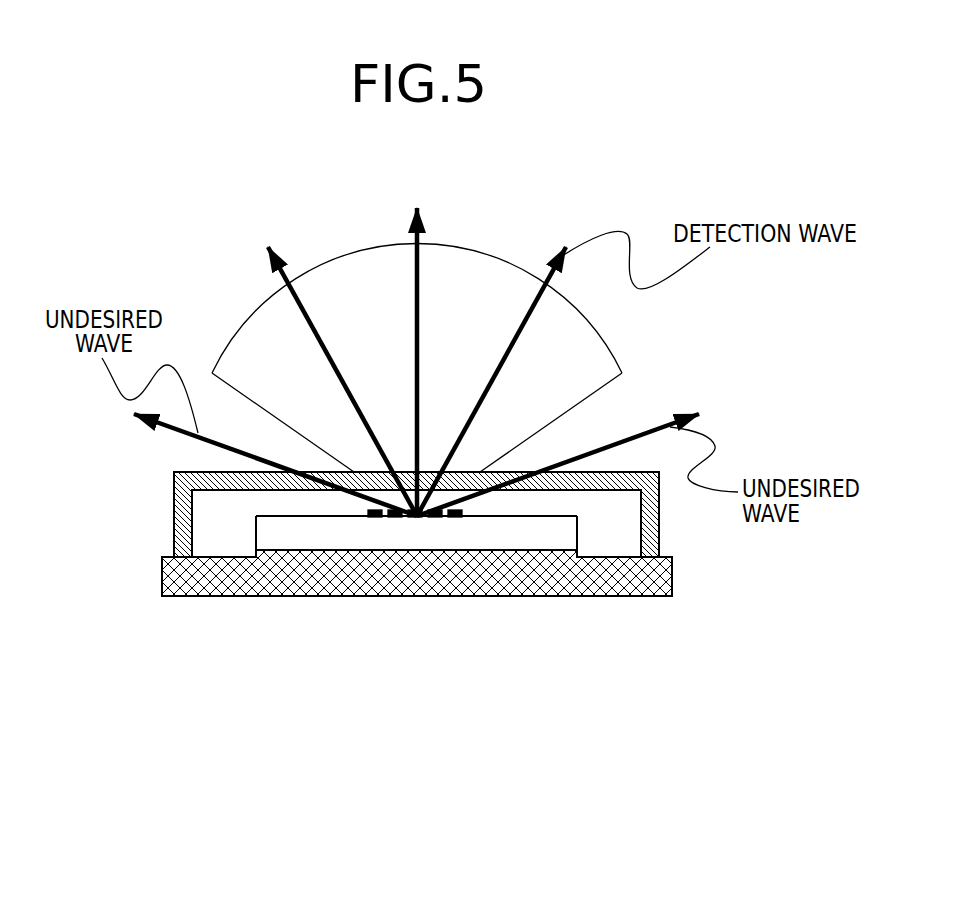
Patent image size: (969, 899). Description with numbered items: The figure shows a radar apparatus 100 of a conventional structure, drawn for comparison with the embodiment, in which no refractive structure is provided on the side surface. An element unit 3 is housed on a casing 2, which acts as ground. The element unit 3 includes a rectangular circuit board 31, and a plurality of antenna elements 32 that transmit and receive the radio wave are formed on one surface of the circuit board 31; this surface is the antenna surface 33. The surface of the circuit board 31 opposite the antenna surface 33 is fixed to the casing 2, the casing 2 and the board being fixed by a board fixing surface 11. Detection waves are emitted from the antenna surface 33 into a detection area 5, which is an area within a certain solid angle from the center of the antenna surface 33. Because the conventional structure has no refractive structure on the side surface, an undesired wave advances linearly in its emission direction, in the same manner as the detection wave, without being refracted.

The radar apparatus of a conventional structure 100 is at (104, 202).
The detection area 5 is at (355, 253).
The casing 2 is at (672, 585).
The element unit 3 is at (278, 533).
The board fixing surface 11 is at (343, 543).
The circuit board 31 is at (558, 533).
The antenna elements 32 is at (413, 507).
The antenna surface 33 is at (507, 502).